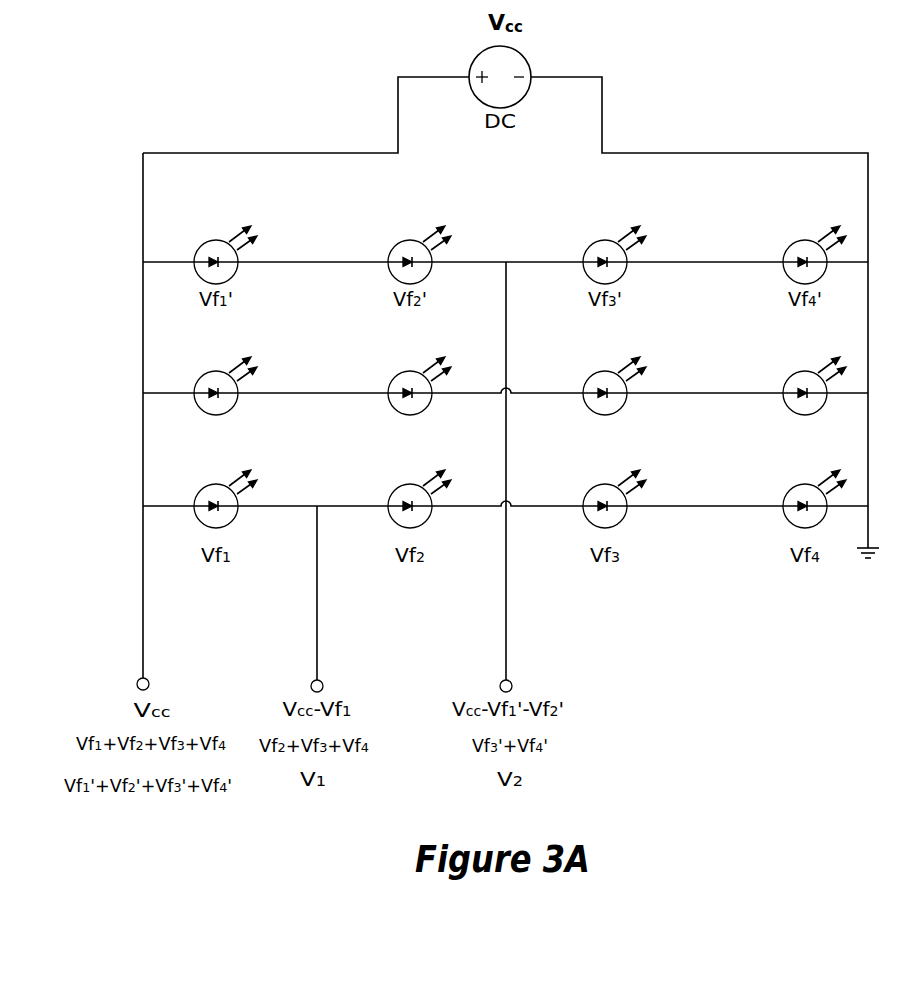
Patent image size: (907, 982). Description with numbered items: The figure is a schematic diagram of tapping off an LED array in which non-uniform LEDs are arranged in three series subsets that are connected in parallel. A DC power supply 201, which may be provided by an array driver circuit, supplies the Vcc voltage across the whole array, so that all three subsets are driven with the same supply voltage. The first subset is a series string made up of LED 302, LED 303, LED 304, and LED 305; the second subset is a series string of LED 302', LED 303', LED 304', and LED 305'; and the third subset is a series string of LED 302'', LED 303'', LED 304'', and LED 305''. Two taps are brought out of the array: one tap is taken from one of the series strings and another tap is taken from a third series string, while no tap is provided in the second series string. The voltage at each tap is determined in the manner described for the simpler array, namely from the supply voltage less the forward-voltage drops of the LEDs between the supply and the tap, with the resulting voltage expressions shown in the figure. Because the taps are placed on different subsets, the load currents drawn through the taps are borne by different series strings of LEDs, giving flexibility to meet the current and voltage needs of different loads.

The DC power supply 201 is at (469, 72).
The LED 302 is at (206, 479).
The LED 303 is at (395, 479).
The LED 304 is at (592, 479).
The LED 305 is at (793, 479).
The LED 302' is at (204, 236).
The LED 303' is at (393, 236).
The LED 304' is at (590, 236).
The LED 305' is at (790, 236).
The LED 302'' is at (201, 366).
The LED 303'' is at (390, 366).
The LED 304'' is at (588, 366).
The LED 305'' is at (788, 366).